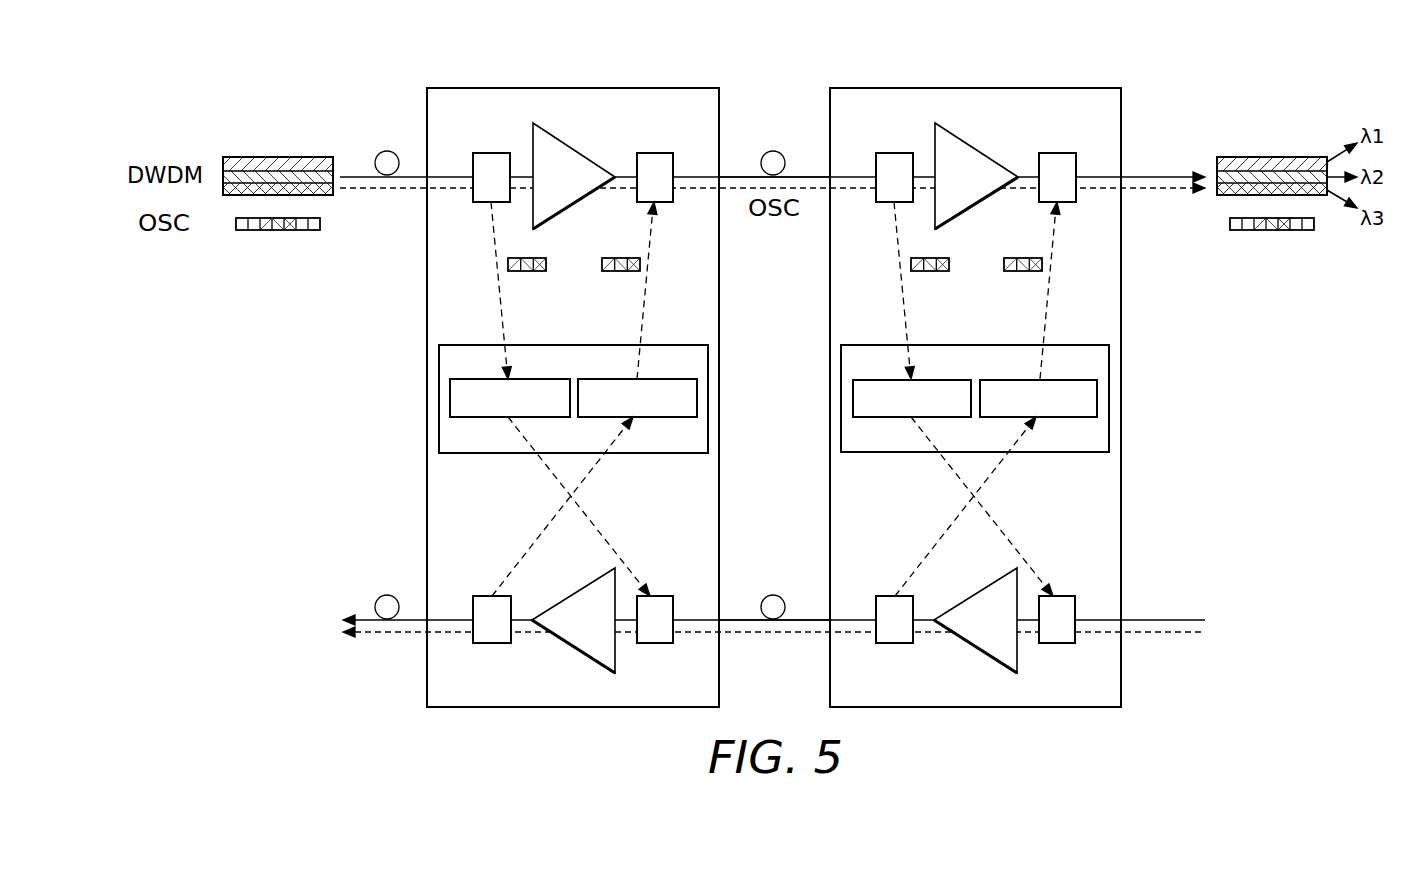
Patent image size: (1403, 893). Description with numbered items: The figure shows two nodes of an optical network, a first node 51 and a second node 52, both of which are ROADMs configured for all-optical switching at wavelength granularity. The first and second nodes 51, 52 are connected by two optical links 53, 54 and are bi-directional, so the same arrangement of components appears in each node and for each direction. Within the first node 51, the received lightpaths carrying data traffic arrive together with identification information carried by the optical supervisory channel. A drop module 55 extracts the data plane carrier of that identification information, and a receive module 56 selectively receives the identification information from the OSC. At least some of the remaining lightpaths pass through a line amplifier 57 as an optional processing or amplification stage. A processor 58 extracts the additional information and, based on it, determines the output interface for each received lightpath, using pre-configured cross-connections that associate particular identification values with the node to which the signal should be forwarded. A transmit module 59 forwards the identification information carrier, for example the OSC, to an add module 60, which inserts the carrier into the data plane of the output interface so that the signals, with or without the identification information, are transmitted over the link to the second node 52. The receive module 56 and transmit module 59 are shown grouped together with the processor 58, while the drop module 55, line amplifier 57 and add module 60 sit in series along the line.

The first node 51 is at (693, 88).
The second node 52 is at (1095, 88).
The optical link 53 is at (800, 176).
The optical link 54 is at (800, 619).
The drop module 55 is at (489, 152).
The receive module 56 is at (450, 397).
The line amplifier 57 is at (575, 210).
The processor 58 is at (458, 345).
The transmit module 59 is at (697, 397).
The add module 60 is at (653, 152).